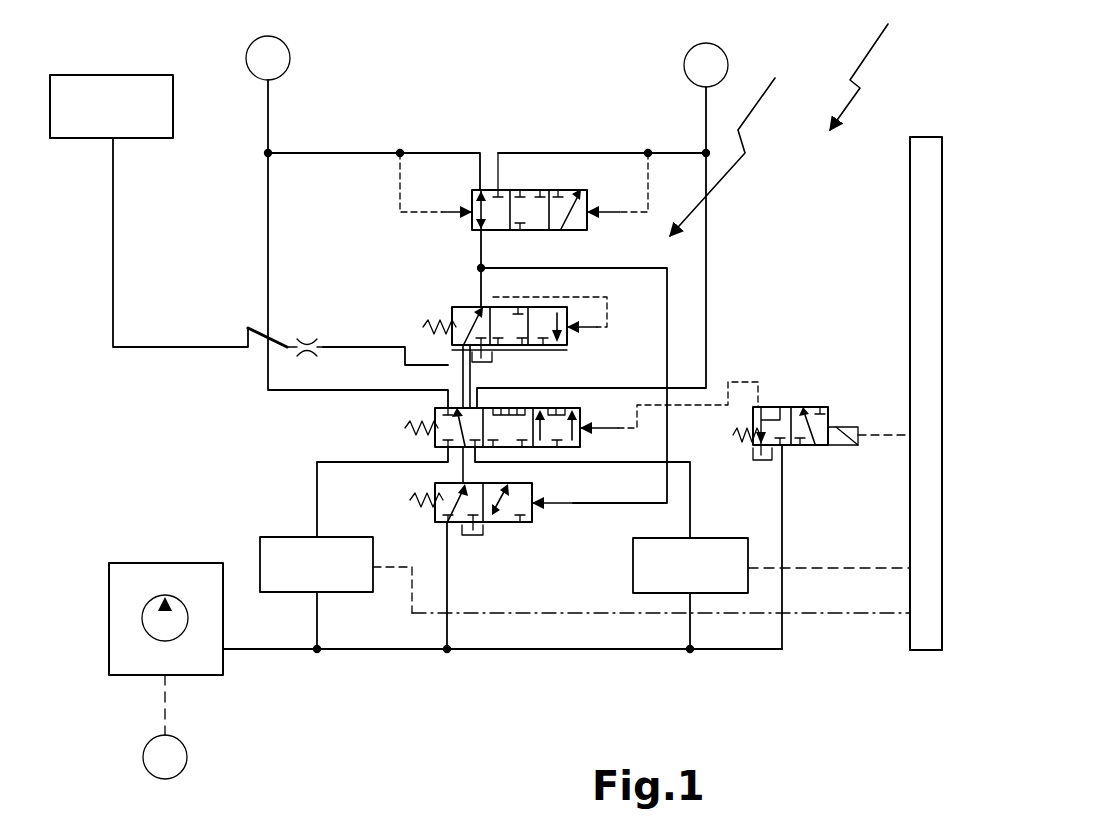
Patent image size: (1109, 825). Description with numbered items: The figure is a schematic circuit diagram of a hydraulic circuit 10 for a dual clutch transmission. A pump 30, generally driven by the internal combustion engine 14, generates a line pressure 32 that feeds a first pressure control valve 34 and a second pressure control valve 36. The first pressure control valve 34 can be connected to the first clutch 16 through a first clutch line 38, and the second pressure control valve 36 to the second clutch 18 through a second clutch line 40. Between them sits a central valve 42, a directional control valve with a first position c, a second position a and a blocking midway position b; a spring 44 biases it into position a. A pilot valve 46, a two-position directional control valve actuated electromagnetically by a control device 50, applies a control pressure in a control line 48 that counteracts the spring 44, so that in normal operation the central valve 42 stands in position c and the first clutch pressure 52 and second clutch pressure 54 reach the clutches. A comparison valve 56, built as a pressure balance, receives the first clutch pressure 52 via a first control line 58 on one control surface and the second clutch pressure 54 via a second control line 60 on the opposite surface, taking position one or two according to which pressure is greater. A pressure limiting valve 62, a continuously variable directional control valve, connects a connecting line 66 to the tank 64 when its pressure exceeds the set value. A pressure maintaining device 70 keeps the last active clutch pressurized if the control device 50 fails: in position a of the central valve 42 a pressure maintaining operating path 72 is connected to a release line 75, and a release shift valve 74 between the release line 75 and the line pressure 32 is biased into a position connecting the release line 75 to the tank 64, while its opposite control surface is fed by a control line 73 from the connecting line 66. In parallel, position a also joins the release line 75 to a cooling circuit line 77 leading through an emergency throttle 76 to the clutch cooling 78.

The hydraulic circuit 10 is at (866, 70).
The internal combustion engine 14 is at (165, 727).
The first clutch 16 is at (268, 58).
The second clutch 18 is at (706, 65).
The pump 30 is at (172, 563).
The line pressure 32 is at (410, 651).
The first pressure control valve 34 is at (300, 592).
The second pressure control valve 36 is at (715, 593).
The first clutch line 38 is at (317, 500).
The second clutch line 40 is at (690, 510).
The central valve 42 is at (430, 408).
The spring 44 is at (405, 430).
The pilot valve 46 is at (811, 452).
The control line 48 is at (745, 385).
The control device 50 is at (925, 651).
The first clutch pressure 52 is at (268, 217).
The second clutch pressure 54 is at (707, 233).
The comparison valve 56 is at (587, 188).
The first control line 58 is at (398, 185).
The second control line 60 is at (648, 185).
The pressure limiting valve 62 is at (450, 306).
The tank 64 is at (484, 362).
The connecting line 66 is at (481, 255).
The pressure maintaining device 70 is at (733, 143).
The pressure maintaining operating path 72 is at (462, 362).
The control line 73 is at (668, 325).
The release shift valve 74 is at (509, 526).
The release line 75 is at (462, 470).
The emergency throttle 76 is at (307, 353).
The cooling circuit line 77 is at (345, 346).
The clutch cooling 78 is at (140, 140).